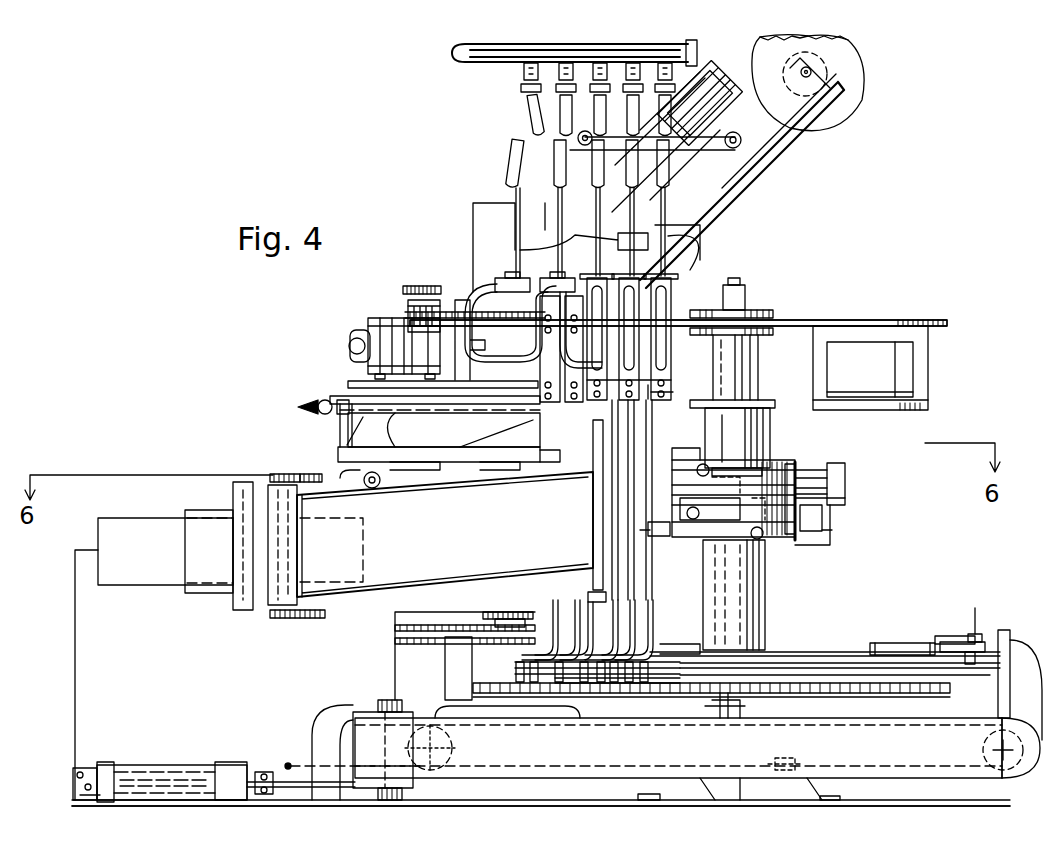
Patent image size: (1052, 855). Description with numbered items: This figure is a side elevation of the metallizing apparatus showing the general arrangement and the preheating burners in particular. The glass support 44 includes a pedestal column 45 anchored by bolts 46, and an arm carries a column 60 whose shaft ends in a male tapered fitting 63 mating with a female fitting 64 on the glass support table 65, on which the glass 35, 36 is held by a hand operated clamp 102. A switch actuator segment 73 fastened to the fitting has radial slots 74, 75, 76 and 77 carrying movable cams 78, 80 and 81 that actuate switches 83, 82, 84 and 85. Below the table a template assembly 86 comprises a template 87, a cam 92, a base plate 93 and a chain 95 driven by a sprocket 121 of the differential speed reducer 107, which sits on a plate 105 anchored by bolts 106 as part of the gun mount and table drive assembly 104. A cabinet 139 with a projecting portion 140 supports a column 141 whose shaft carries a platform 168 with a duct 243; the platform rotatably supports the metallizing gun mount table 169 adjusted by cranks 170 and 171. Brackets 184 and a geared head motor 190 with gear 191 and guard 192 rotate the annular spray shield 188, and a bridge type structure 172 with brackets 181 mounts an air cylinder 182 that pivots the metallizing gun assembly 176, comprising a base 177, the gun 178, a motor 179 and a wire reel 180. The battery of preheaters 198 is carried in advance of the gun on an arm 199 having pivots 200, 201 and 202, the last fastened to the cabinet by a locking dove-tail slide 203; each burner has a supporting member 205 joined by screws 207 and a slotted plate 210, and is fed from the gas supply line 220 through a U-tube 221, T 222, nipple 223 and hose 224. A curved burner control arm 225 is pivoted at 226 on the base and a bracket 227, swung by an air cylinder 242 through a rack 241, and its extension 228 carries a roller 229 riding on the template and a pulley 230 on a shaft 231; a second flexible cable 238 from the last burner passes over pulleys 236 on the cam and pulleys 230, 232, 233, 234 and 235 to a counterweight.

The gas supply line 220 is at (505, 62).
The hose 224 is at (510, 146).
The nipple 223 is at (558, 168).
The motor 179 is at (718, 80).
The reel 180 is at (855, 75).
The air cylinder 182 is at (735, 131).
The base 177 is at (770, 138).
The metallizing gun assembly 176 is at (758, 173).
The bridge type structure 172 is at (483, 218).
The brackets 181 is at (530, 185).
The T 222 is at (505, 280).
The U-tube 221 is at (494, 286).
The gun 178 is at (648, 268).
The battery of gas fueled preheaters 198 is at (680, 296).
The guard 192 is at (415, 286).
The gear 191 is at (408, 303).
The right angled, geared head motor 190 is at (370, 330).
The annular spray shield 188 is at (482, 312).
The hand operated clamp 102 is at (752, 310).
The glass 35 is at (832, 318).
The glass 36 is at (678, 323).
The metallizing gun mount table 169 is at (350, 382).
The crank 171 is at (315, 400).
The brackets 184 is at (470, 368).
The second plate 210 is at (667, 372).
The screws 207 is at (655, 387).
The glass support table 65 is at (936, 379).
The duct 243 is at (422, 436).
The female fitting 64 is at (742, 420).
The male tapered fitting 63 is at (735, 445).
The movable cam 78 is at (700, 465).
The switch actuator segment 73 is at (762, 462).
The radial slot 74 is at (790, 470).
The switch 83 is at (835, 470).
The pivot 201 is at (280, 474).
The pivot 202 is at (308, 474).
The switch 82 is at (838, 492).
The locking dove-tail slide 203 is at (185, 520).
The cabinet 139 is at (88, 560).
The crank 170 is at (358, 480).
The platform 168 is at (405, 470).
The arm 199 is at (450, 541).
The pivot 200 is at (598, 527).
The movable cam 80 is at (685, 500).
The radial slot 75 is at (752, 478).
The radial slot 76 is at (755, 520).
The switch 84 is at (822, 515).
The switch 85 is at (660, 538).
The radial slot 77 is at (722, 535).
The movable cam 81 is at (765, 540).
The column 60 is at (745, 578).
The glass support 44 is at (692, 580).
The supporting member 205 is at (647, 599).
The portion 140 is at (432, 604).
The column 141 is at (505, 612).
The second flexible cable 238 is at (290, 762).
The template assembly 86 is at (826, 650).
The pulleys 236 is at (925, 640).
The pulley 230 is at (952, 642).
The shaft 231 is at (975, 608).
The second pulley 232 is at (1004, 632).
The cam 92 is at (806, 655).
The template 87 is at (860, 648).
The metallizing gun mount and table drive assembly 104 is at (204, 656).
The pivot 226 is at (385, 700).
The sprocket 121 is at (480, 684).
The roller 229 is at (975, 665).
The base plate 93 is at (700, 683).
The chain 95 is at (875, 690).
The bracket 227 is at (322, 713).
The air cylinder 242 is at (205, 765).
The rack 241 is at (285, 780).
The bolts 106 is at (112, 782).
The fifth pulley 235 is at (455, 752).
The burner control arm 225 is at (707, 741).
The fourth pulley 234 is at (795, 760).
The extension 228 is at (1002, 715).
The third pulley 233 is at (983, 750).
The differential speed reducer 107 is at (468, 796).
The plate 105 is at (522, 796).
The bolts 46 is at (866, 800).
The column 45 is at (850, 807).